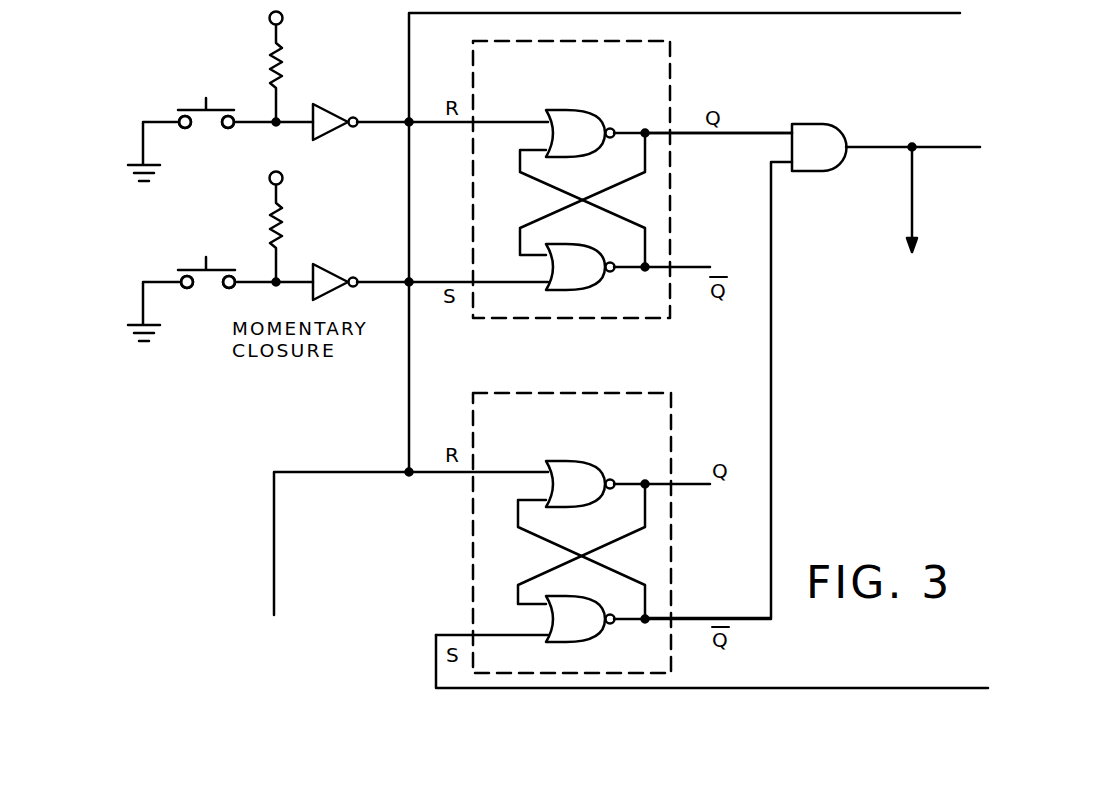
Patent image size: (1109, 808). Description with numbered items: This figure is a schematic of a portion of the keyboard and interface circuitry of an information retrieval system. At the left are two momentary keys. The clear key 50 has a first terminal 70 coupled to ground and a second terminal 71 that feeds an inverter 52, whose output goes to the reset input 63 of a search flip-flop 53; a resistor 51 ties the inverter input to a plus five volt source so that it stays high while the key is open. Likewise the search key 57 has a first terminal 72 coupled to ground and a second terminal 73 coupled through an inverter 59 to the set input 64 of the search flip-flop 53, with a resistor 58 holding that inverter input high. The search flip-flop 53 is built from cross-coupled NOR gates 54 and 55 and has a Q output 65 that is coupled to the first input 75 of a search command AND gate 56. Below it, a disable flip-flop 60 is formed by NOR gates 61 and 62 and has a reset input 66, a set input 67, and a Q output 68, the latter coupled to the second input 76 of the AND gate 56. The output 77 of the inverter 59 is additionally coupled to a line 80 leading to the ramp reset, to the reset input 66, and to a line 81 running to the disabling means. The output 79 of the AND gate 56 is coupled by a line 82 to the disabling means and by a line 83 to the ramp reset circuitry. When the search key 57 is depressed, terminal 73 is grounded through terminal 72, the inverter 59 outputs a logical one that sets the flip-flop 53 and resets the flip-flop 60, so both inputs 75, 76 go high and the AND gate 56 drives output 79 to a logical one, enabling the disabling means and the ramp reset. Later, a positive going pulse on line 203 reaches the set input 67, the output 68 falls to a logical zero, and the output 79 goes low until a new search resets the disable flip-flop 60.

The clear key 50 is at (182, 108).
The resistor 51 is at (270, 70).
The inverter 52 is at (330, 128).
The search flip-flop 53 is at (662, 62).
The NOR gate 54 is at (565, 122).
The NOR gate 55 is at (572, 256).
The search command AND gate 56 is at (820, 133).
The search key 57 is at (182, 268).
The resistor 58 is at (270, 232).
The inverter 59 is at (338, 264).
The disable flip-flop 60 is at (660, 418).
The NOR gate 61 is at (577, 462).
The NOR gate 62 is at (566, 607).
The reset input 63 is at (545, 118).
The set input 64 is at (545, 282).
The Q output 65 is at (662, 135).
The reset input 66 is at (545, 472).
The set input 67 is at (545, 640).
The Q output 68 is at (665, 622).
The first terminal 70 is at (188, 129).
The second terminal 71 is at (226, 129).
The first terminal 72 is at (188, 289).
The second terminal 73 is at (228, 289).
The first input 75 is at (790, 128).
The second input 76 is at (792, 167).
The output 77 is at (357, 286).
The output 79 is at (850, 150).
The line 80 is at (752, 13).
The line 81 is at (274, 573).
The line 82 is at (915, 200).
The line 83 is at (938, 148).
The line 203 is at (755, 687).